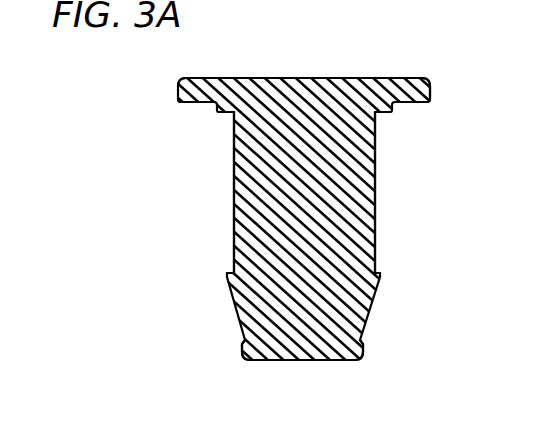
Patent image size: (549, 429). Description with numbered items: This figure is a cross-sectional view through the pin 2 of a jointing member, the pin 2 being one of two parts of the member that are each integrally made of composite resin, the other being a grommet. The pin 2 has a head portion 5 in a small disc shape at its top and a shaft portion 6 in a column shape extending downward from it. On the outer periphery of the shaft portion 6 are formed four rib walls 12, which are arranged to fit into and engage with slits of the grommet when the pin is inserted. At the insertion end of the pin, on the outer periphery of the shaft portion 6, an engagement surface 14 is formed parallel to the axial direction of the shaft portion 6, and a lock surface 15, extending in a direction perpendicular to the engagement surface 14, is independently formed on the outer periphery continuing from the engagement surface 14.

The pin 2 is at (176, 143).
The head portion 5 is at (390, 78).
The shaft portion 6 is at (270, 176).
The rib wall 12 is at (234, 237).
The engagement surface 14 is at (358, 340).
The lock surface 15 is at (243, 342).